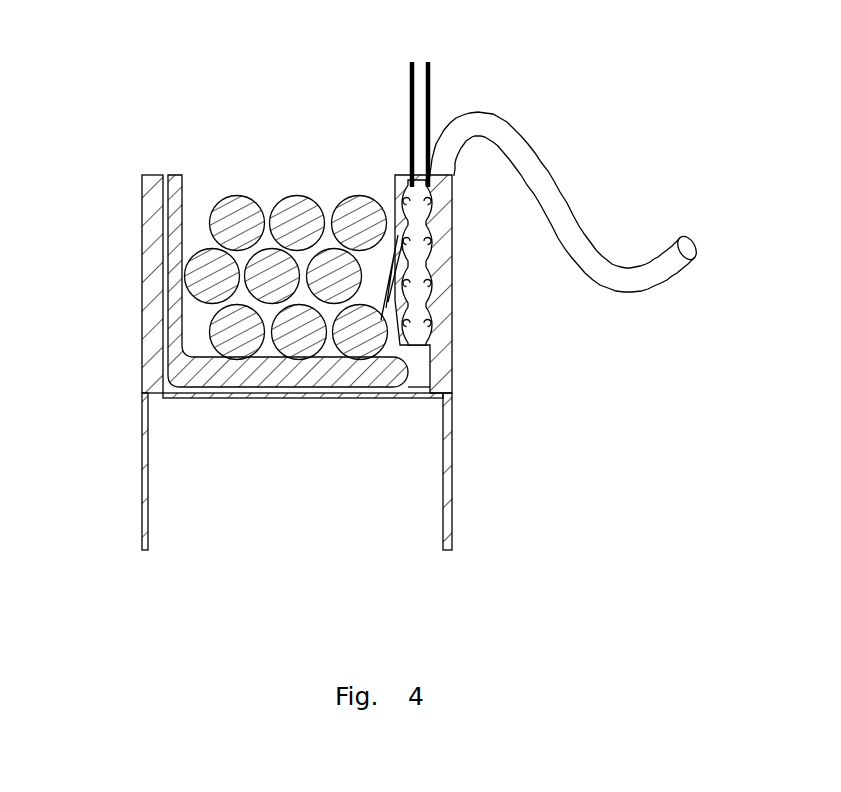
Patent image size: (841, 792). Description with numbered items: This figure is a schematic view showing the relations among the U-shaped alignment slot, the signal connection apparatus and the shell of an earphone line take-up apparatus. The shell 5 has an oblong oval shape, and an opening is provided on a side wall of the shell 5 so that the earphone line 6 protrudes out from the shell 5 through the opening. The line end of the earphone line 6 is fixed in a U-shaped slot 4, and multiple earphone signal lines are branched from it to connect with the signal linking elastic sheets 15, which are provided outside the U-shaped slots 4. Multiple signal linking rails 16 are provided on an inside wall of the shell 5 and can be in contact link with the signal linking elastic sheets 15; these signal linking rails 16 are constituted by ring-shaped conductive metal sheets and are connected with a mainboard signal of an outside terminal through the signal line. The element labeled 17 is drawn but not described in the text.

The U-shaped slot 4 is at (175, 190).
The shell 5 is at (147, 302).
The earphone line 6 is at (362, 340).
The signal linking elastic sheets 15 is at (412, 62).
The signal linking rails 16 is at (428, 62).
The hose / tube 17 is at (548, 163).